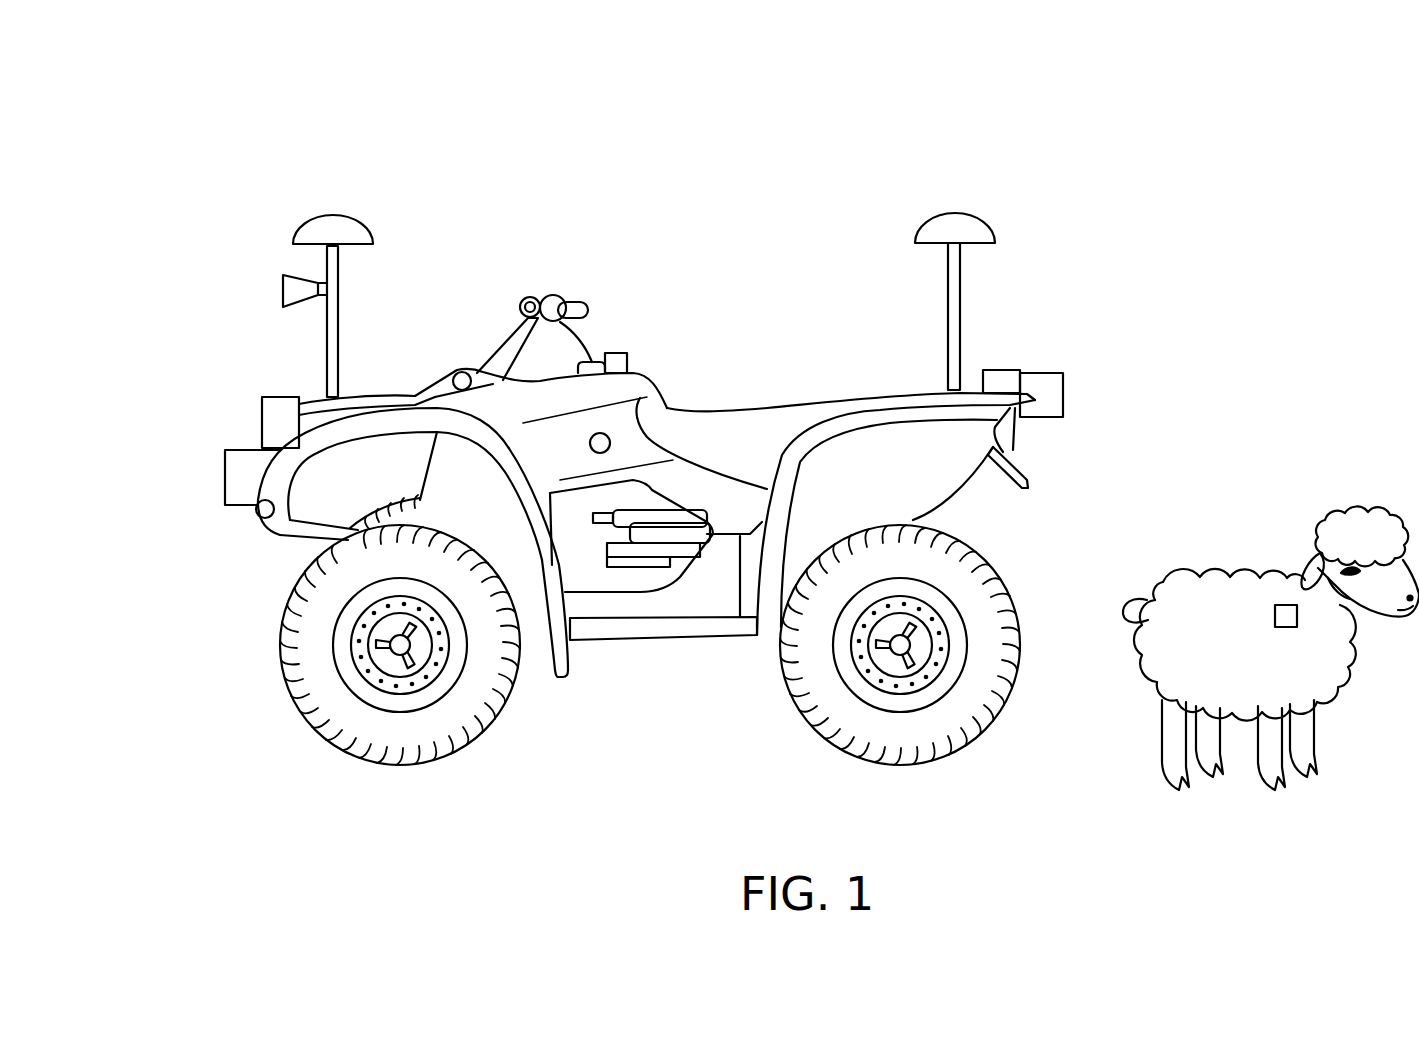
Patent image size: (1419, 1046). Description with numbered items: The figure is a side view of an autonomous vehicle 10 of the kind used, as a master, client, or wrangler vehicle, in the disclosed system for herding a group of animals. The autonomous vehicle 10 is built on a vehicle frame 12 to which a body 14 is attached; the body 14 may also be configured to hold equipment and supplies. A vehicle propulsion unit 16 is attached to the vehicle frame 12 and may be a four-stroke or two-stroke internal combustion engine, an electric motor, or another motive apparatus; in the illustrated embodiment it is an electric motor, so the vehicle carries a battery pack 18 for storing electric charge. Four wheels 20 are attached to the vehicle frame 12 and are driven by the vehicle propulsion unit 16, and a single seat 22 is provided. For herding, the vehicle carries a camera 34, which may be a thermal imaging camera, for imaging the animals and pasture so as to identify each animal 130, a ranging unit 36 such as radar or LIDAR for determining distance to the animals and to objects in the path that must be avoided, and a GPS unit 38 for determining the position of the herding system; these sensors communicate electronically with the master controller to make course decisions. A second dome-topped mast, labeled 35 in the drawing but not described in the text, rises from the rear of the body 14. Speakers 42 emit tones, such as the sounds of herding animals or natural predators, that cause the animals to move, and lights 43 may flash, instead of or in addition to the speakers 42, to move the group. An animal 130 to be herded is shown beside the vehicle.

The autonomous vehicle 10 is at (795, 160).
The vehicle frame 12 is at (313, 540).
The body 14 is at (457, 371).
The vehicle propulsion unit 16 is at (940, 487).
The battery pack 18 is at (633, 573).
The wheels 20 is at (473, 733).
The seat 22 is at (737, 420).
The camera 34 is at (233, 478).
The rear antenna 35 is at (963, 213).
The ranging unit 36 is at (335, 212).
The GPS unit 38 is at (270, 432).
The speakers 42 is at (283, 293).
The lights 43 is at (256, 514).
The animal 130 is at (1287, 520).